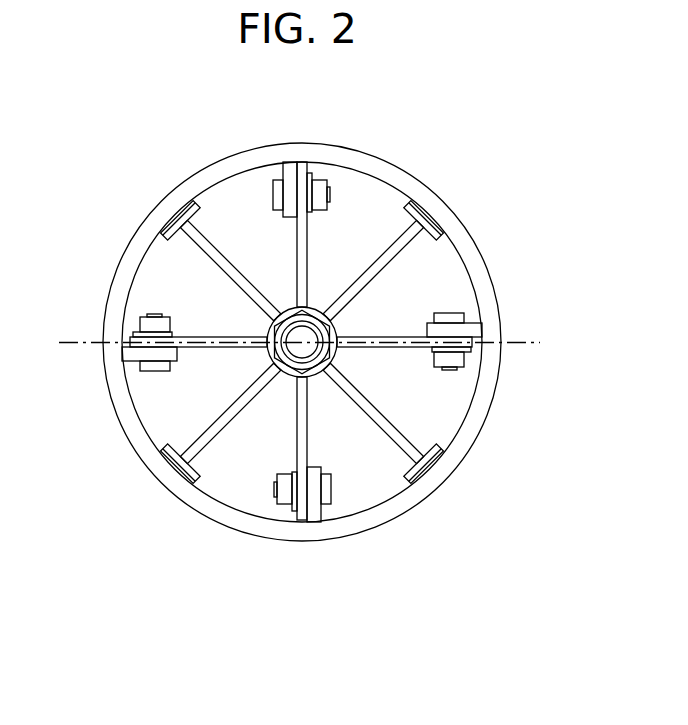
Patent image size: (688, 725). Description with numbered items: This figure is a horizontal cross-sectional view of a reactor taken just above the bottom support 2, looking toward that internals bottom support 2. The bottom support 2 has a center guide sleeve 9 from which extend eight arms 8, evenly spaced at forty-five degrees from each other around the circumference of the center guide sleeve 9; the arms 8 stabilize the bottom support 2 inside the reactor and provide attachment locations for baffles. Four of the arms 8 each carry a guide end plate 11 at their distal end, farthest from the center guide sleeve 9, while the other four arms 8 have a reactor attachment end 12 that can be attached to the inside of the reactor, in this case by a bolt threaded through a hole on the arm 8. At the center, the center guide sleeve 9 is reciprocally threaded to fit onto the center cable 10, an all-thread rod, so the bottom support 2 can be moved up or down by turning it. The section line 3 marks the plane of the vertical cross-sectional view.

The bottom support 2 is at (550, 264).
The section line 3- 3 is at (300, 343).
The arm 8 is at (253, 284).
The center guide sleeve 9 is at (337, 357).
The center cable 10 is at (296, 366).
The guide end plate 11 is at (197, 207).
The reactor attachment end 12 is at (308, 172).